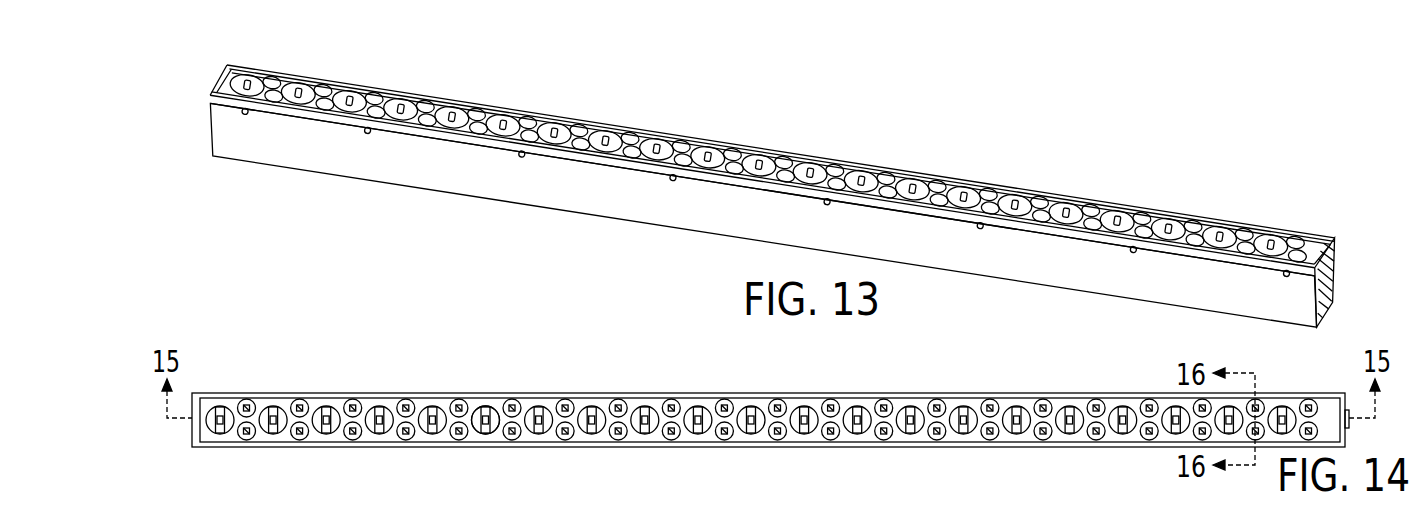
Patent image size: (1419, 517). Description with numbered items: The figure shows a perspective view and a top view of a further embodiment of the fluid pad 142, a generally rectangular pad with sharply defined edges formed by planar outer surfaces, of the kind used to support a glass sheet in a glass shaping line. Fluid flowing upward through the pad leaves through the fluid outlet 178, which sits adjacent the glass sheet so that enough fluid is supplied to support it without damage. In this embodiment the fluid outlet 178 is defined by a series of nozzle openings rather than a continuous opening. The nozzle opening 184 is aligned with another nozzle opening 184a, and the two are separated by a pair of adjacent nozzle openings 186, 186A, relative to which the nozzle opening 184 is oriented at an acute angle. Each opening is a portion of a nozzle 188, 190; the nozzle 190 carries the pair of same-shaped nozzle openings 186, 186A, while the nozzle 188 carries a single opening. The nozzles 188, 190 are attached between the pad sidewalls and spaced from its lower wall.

In FIG. 13, the fluid pad 142 is at (194, 98).
In FIG. 14, the fluid pad 142 is at (147, 398).
In FIG. 13, the fluid outlet 178 is at (1160, 210).
In FIG. 14, the nozzle opening 184 is at (476, 406).
In FIG. 14, the nozzle opening 184a is at (528, 408).
In FIG. 14, the nozzle opening 186 is at (506, 401).
In FIG. 14, the nozzle opening 186A is at (501, 438).
In FIG. 14, the nozzle 188 is at (475, 434).
In FIG. 14, the nozzle 190 is at (564, 400).